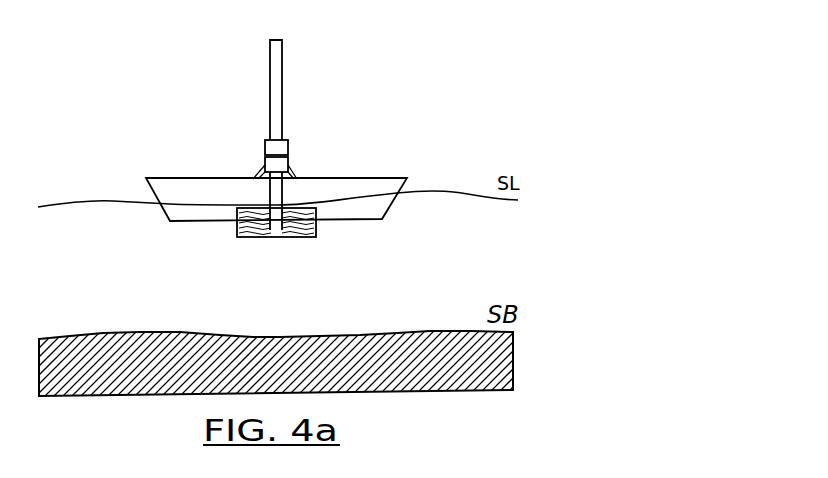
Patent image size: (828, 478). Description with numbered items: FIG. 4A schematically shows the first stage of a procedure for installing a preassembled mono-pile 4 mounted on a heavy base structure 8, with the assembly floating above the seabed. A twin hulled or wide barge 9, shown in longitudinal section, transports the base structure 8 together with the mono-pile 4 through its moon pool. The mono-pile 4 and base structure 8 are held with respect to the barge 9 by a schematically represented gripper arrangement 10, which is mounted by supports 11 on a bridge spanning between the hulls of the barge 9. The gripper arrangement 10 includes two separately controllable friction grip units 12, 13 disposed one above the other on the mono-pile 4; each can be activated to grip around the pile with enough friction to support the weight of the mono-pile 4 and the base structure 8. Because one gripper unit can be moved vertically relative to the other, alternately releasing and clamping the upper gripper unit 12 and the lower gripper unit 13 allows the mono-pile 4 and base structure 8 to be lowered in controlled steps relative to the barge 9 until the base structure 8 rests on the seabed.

The mono-pile 4 is at (283, 57).
The base structure 8 is at (316, 232).
The barge 9 is at (372, 185).
The gripper arrangement 10 is at (262, 142).
The supports 11 is at (258, 173).
The upper gripper unit 12 is at (289, 142).
The lower gripper unit 13 is at (289, 160).